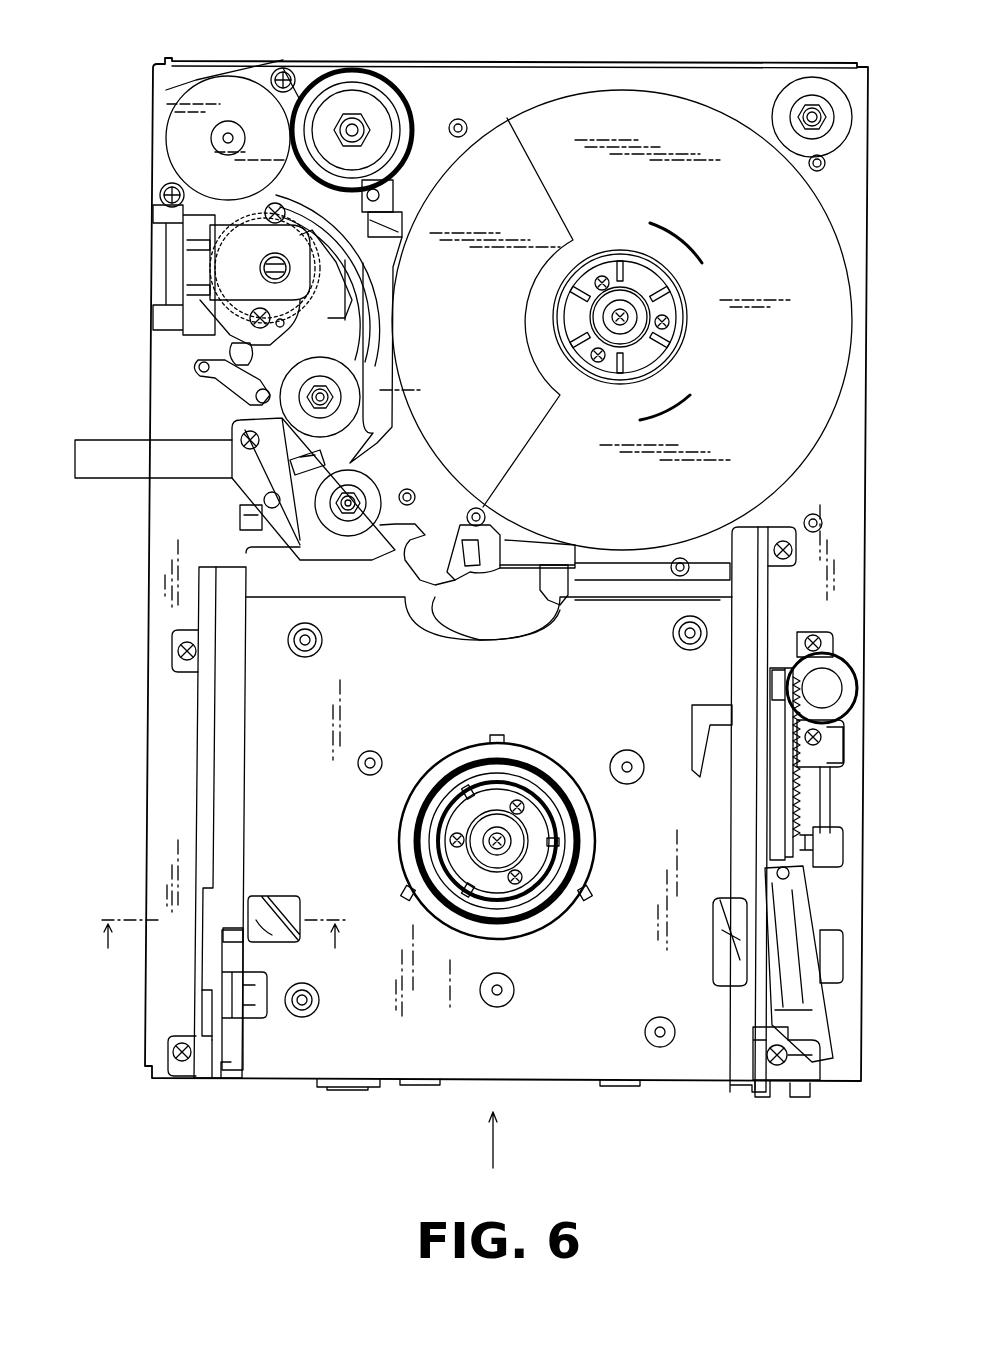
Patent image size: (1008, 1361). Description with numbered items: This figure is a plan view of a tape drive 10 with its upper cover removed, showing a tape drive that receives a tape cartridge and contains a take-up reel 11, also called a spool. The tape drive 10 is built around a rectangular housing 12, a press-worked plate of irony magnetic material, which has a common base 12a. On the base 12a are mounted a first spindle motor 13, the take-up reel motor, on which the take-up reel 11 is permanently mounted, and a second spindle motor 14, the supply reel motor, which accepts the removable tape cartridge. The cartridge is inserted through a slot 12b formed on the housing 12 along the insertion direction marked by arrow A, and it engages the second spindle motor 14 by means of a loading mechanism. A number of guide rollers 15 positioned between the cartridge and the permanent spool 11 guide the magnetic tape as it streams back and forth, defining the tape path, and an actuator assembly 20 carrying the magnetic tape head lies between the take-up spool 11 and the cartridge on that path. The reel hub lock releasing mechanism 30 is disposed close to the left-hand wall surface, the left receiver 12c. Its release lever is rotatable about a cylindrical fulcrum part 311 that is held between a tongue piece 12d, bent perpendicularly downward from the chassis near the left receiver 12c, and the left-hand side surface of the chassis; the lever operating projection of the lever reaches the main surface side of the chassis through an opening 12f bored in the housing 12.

The tape drive 10 is at (125, 1088).
The take-up reel 11 is at (848, 205).
The housing 12 is at (147, 766).
The base 12a is at (168, 720).
The slot 12b is at (743, 1000).
The left receiver 12c is at (205, 793).
The tongue piece 12d is at (248, 940).
The opening 12f is at (227, 1020).
The first spindle motor 13 is at (665, 331).
The second spindle motor 14 is at (540, 862).
The guide rollers 15 is at (352, 72).
The actuator assembly 20 is at (178, 357).
The reel hub lock releasing mechanism 30 is at (210, 1008).
The fulcrum part 311 is at (265, 905).